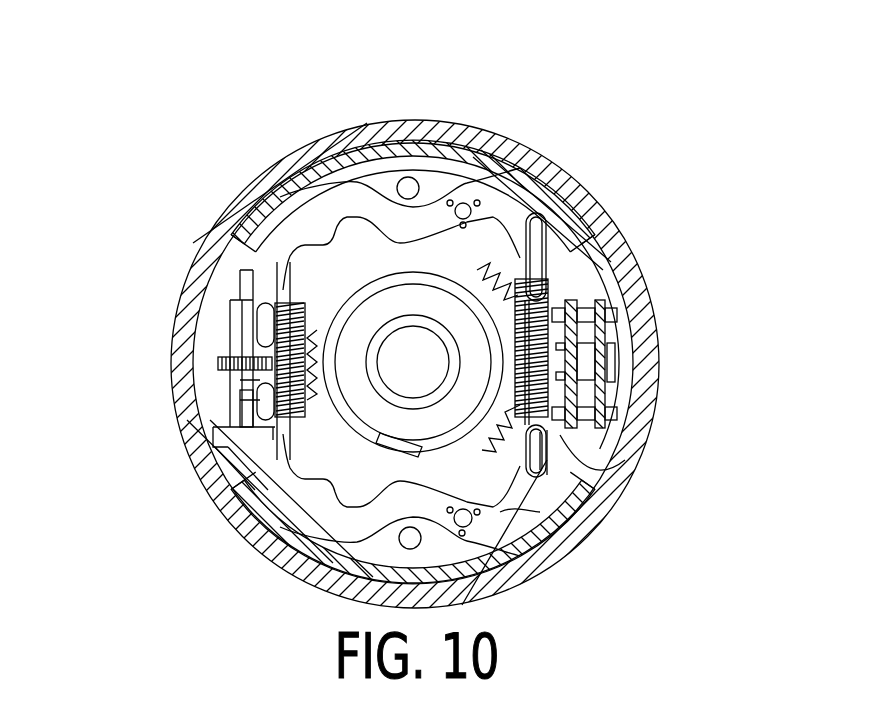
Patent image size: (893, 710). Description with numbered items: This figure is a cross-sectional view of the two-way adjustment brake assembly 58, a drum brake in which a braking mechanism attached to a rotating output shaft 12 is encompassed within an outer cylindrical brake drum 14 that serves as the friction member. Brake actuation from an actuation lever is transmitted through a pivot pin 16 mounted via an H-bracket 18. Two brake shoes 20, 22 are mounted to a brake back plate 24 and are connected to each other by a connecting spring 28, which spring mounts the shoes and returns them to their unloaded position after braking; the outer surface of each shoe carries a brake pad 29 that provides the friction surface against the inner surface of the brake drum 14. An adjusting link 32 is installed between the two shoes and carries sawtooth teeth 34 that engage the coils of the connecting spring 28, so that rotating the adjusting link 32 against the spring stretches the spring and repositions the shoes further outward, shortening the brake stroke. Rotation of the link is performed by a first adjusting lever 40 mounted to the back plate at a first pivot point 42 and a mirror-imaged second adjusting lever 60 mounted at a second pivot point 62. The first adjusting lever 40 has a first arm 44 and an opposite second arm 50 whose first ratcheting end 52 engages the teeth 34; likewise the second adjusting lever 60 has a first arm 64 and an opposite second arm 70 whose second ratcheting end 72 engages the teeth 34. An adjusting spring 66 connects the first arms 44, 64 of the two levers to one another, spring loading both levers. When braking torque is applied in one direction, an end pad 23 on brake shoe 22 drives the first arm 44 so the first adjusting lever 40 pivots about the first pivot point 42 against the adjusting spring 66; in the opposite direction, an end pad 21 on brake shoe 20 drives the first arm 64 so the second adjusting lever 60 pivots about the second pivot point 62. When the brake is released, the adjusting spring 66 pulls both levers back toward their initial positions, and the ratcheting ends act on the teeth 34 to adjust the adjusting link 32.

The output shaft 12 is at (413, 340).
The brake drum 14 is at (186, 277).
The pivot pin 16 is at (612, 367).
The H-bracket 18 is at (567, 459).
The brake shoe 20 is at (375, 177).
The end pad 21 is at (583, 310).
The brake shoe 22 is at (378, 558).
The end pad 23 is at (615, 413).
The brake back plate 24 is at (271, 247).
The connecting spring 28 is at (228, 277).
The brake pad 29 is at (447, 155).
The adjusting link 32 is at (217, 362).
The teeth 34 is at (237, 392).
The first adjusting lever 40 is at (510, 508).
The first pivot point 42 is at (472, 520).
The first arm 44 is at (583, 430).
The second arm 50 is at (267, 433).
The first ratcheting end 52 is at (263, 398).
The two-way adjustment brake assembly 58 is at (147, 158).
The second adjusting lever 60 is at (342, 190).
The second pivot point 62 is at (468, 200).
The first arm 64 is at (557, 250).
The adjusting spring 66 is at (548, 295).
The second arm 70 is at (282, 293).
The second ratcheting end 72 is at (238, 330).